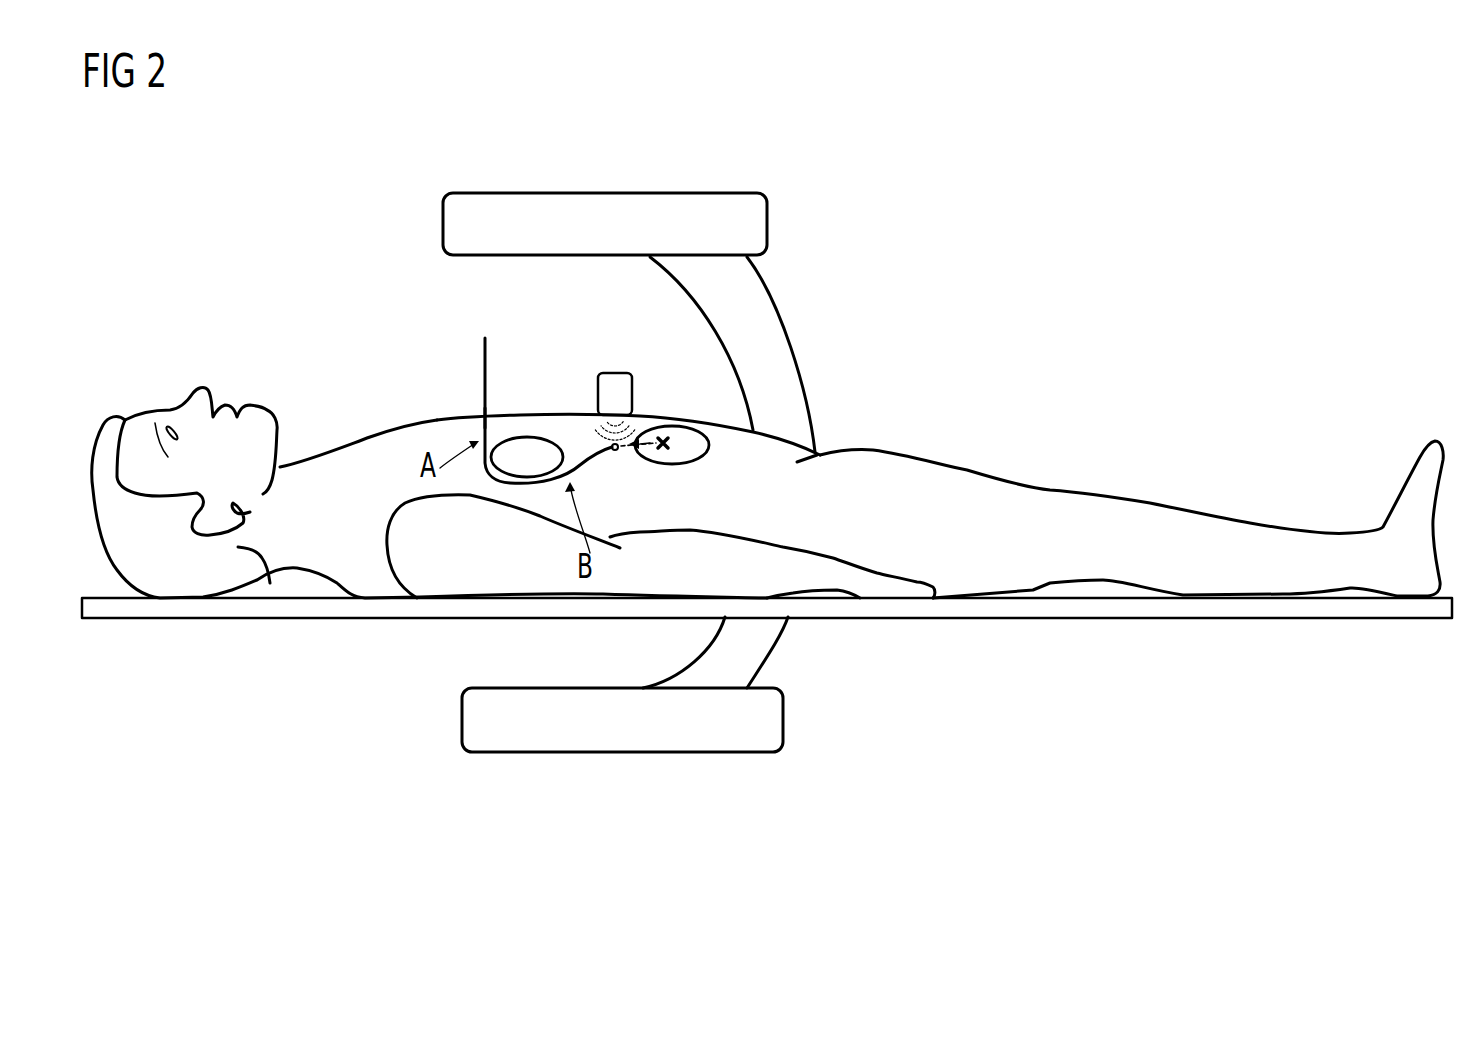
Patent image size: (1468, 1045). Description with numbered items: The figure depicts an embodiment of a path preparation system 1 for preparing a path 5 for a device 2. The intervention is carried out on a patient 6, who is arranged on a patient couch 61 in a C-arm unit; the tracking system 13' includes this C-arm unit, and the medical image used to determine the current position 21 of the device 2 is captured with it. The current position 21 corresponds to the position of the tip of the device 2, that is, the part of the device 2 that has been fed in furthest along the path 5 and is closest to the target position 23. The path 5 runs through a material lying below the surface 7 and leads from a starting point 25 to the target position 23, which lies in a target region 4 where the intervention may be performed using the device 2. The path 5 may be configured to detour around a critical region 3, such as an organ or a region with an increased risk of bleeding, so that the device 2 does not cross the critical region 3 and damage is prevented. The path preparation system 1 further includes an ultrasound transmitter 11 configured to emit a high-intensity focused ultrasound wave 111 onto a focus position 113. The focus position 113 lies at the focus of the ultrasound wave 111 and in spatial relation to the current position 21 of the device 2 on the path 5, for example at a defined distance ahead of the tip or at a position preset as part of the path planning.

The path preparation system 1 is at (440, 315).
The tracking system 13' is at (613, 471).
The patient couch 61 is at (262, 620).
The patient 6 is at (767, 521).
The surface 7 is at (425, 420).
The critical region 3 is at (527, 437).
The target region 4 is at (693, 426).
The target position 23 is at (665, 437).
The device 2 is at (510, 484).
The starting point 25 is at (482, 417).
The current position 21 is at (614, 452).
The focus position 113 is at (621, 450).
The path 5 is at (647, 440).
The ultrasound transmitter 11 is at (615, 373).
The ultrasound wave 111 is at (588, 425).